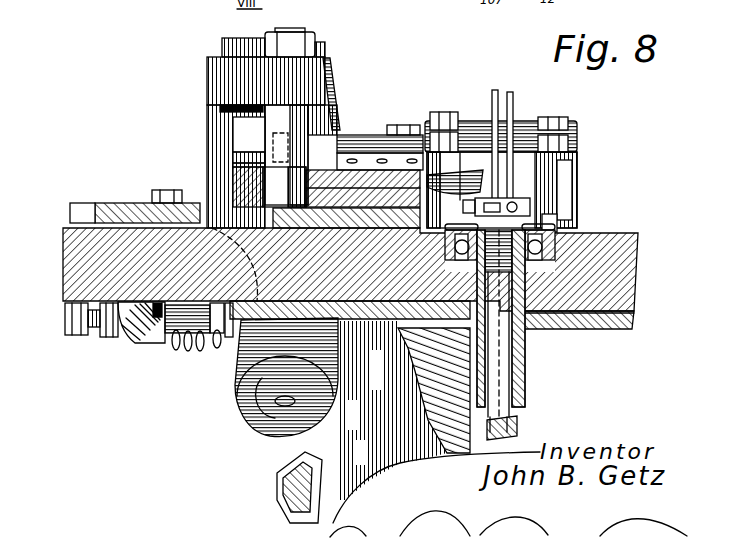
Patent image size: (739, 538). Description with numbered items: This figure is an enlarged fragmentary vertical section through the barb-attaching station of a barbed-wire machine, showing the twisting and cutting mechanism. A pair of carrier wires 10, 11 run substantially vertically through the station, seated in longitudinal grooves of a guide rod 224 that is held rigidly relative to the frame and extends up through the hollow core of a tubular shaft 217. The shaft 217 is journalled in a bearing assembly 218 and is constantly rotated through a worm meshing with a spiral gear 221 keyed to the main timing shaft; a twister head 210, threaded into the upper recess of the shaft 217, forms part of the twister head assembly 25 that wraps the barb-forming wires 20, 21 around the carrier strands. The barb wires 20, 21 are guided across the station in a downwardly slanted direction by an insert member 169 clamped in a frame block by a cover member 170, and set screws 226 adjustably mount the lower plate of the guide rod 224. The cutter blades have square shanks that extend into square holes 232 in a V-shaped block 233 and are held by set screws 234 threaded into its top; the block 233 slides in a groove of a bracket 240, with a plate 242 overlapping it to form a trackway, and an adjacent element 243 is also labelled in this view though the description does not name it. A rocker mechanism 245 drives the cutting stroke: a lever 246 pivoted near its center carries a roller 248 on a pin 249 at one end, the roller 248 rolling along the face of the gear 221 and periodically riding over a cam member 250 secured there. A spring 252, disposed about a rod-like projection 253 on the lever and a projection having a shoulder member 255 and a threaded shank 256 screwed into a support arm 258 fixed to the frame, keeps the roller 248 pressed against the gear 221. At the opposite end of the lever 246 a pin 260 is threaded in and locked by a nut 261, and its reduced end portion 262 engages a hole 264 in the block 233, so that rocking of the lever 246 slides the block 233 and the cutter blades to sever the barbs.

The carrier wire 10 is at (513, 95).
The carrier wire 11 is at (493, 89).
The barb-forming wire 20 is at (528, 208).
The barb-forming wire 21 is at (463, 205).
The twister head assembly 25 is at (557, 222).
The insert member 169 is at (530, 190).
The cover member 170 is at (522, 128).
The twister head 210 is at (518, 207).
The hollow tubular shaft 217 is at (525, 380).
The bearing assembly 218 is at (560, 233).
The spiral gear 221 is at (518, 425).
The guide rod 224 is at (525, 358).
The set screw 226 is at (462, 171).
The square hole 232 is at (235, 165).
The V-shaped block 233 is at (235, 155).
The set screw 234 is at (368, 136).
The bracket 240 is at (273, 217).
The plate 242 is at (398, 133).
The cylinder cap 243 is at (258, 63).
The rocker mechanism 245 is at (203, 71).
The lever 246 is at (235, 378).
The roller 248 is at (237, 413).
The pin 249 is at (266, 415).
The cam member 250 is at (278, 480).
The spring 252 is at (178, 351).
The rod-like projection 253 is at (228, 347).
The shoulder member 255 is at (152, 345).
The threaded shank 256 is at (90, 331).
The support arm 258 is at (118, 341).
The pin 260 is at (290, 28).
The nut 261 is at (316, 34).
The reduced end portion 262 is at (275, 197).
The hole 264 is at (275, 185).